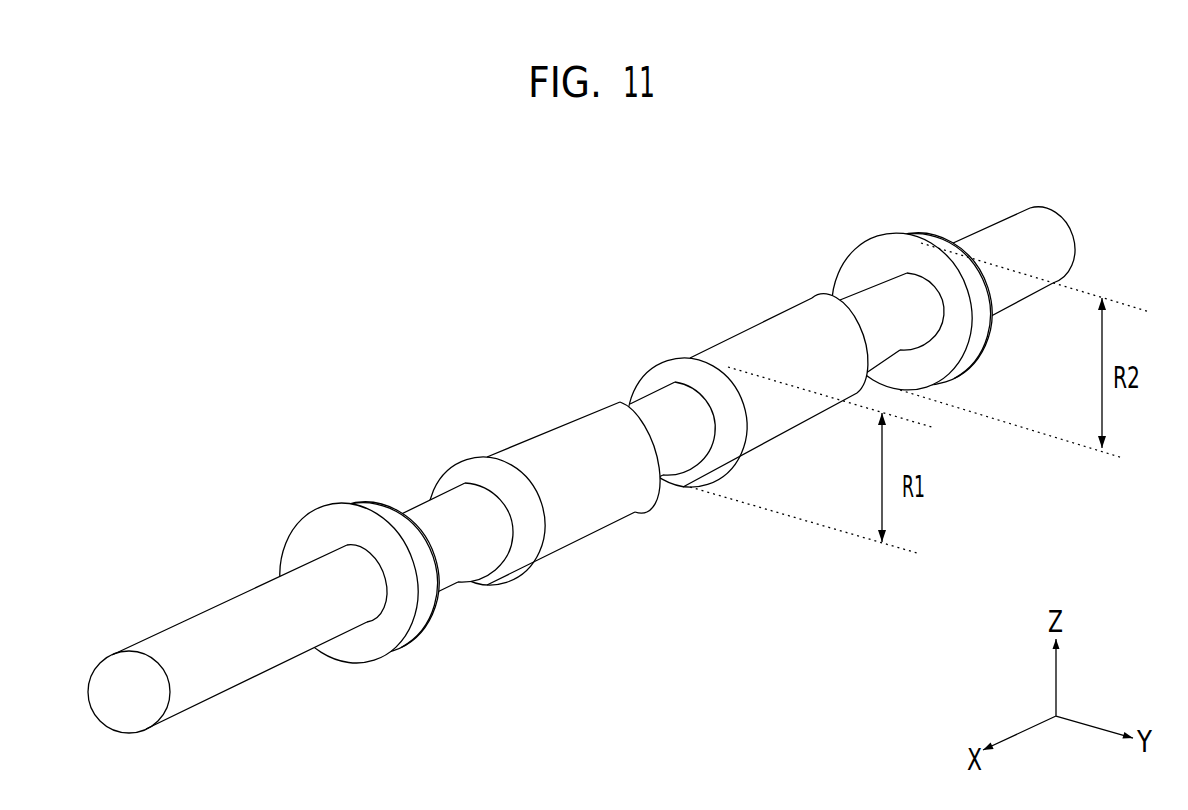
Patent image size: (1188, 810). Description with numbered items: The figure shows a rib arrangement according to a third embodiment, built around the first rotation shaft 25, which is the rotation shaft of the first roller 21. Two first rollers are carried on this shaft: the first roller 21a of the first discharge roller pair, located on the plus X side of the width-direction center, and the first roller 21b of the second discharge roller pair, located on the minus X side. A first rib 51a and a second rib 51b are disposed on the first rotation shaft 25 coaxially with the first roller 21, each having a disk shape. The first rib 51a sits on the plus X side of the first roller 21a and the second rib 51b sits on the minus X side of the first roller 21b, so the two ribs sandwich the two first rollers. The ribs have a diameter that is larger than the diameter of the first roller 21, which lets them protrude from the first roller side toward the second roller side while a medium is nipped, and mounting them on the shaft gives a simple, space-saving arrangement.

The first rotation shaft 25 is at (212, 627).
The first roller 21 is at (667, 188).
The first roller 21a is at (516, 435).
The first roller 21b is at (734, 330).
The first rib 51a is at (357, 502).
The second rib 51b is at (902, 235).